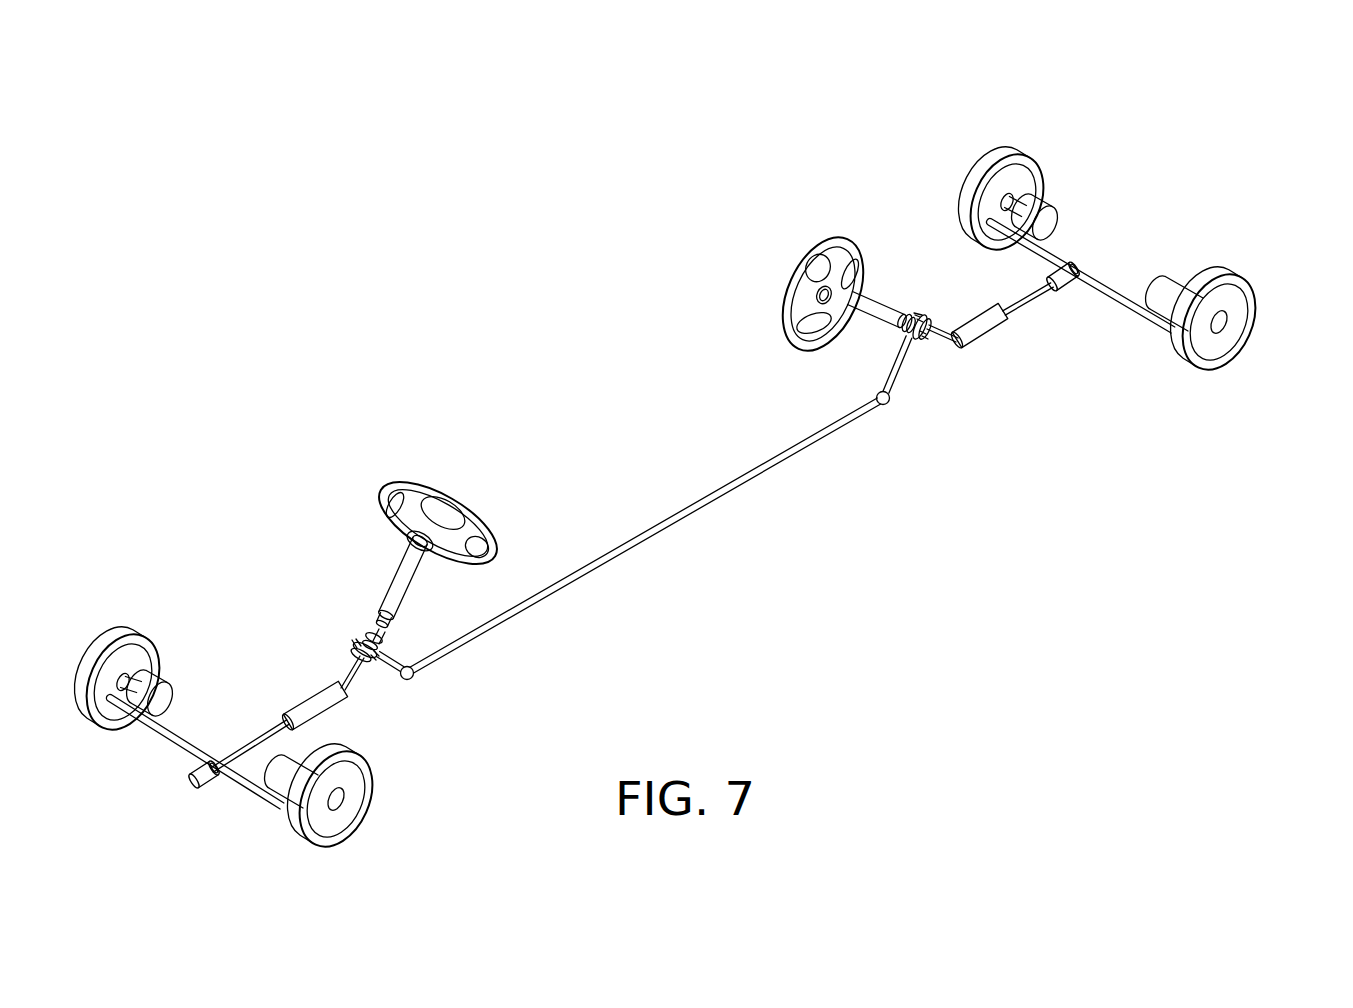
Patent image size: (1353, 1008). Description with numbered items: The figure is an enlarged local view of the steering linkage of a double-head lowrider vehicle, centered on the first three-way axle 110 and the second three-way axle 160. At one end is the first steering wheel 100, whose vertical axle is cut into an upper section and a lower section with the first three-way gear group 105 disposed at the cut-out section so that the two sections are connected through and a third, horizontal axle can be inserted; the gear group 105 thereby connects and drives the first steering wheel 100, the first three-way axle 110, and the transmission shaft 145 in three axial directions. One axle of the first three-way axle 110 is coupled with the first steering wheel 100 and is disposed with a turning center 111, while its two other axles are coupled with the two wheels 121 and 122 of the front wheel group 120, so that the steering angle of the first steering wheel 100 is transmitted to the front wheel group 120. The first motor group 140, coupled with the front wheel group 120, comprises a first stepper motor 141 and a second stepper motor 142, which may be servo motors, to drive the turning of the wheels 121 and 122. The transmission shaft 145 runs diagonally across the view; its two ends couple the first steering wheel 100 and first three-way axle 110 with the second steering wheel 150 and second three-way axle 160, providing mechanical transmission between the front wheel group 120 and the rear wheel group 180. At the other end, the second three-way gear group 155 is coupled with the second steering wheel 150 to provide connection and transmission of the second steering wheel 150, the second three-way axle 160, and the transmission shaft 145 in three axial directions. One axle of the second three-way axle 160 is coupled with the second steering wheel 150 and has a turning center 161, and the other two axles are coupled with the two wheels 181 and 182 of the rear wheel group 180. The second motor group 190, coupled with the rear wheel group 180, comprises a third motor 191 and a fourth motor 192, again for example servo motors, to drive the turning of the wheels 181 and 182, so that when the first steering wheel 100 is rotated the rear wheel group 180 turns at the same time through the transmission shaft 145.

The first steering wheel 100 is at (795, 262).
The first three-way gear group 105 is at (905, 320).
The first three-way axle 110 is at (898, 342).
The turning center 111 is at (1066, 296).
The front wheel group 120 is at (1111, 251).
The wheel 121 is at (972, 178).
The wheel 122 is at (1237, 328).
The first motor group 140 is at (1175, 274).
The first stepper motor 141 is at (1042, 206).
The second stepper motor 142 is at (1175, 286).
The transmission shaft 145 is at (660, 522).
The second steering wheel 150 is at (444, 490).
The second three-way gear group 155 is at (366, 636).
The second three-way axle 160 is at (404, 644).
The turning center 161 is at (209, 760).
The rear wheel group 180 is at (237, 725).
The wheel 181 is at (100, 644).
The wheel 182 is at (325, 824).
The second motor group 190 is at (277, 746).
The third motor 191 is at (160, 680).
The fourth motor 192 is at (300, 765).